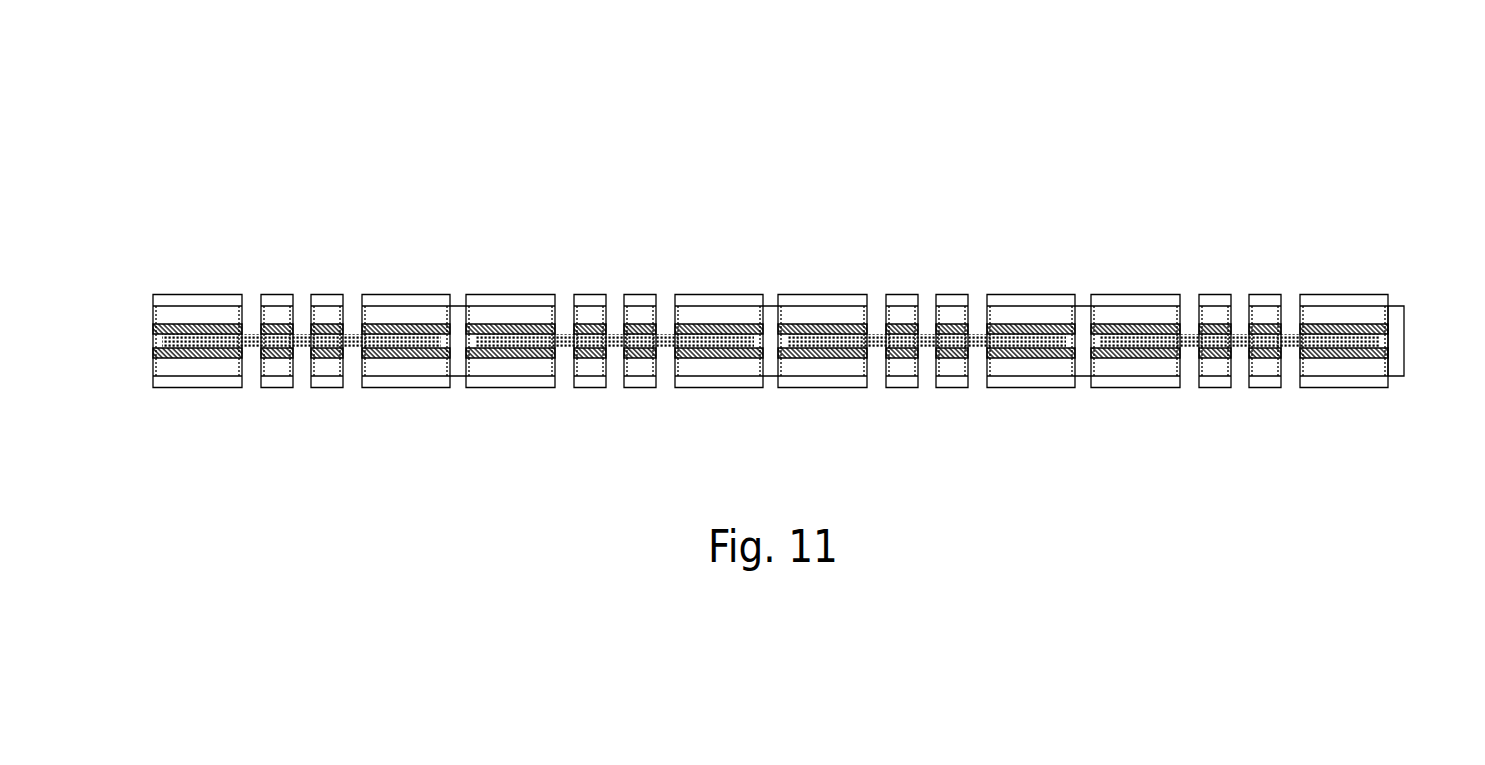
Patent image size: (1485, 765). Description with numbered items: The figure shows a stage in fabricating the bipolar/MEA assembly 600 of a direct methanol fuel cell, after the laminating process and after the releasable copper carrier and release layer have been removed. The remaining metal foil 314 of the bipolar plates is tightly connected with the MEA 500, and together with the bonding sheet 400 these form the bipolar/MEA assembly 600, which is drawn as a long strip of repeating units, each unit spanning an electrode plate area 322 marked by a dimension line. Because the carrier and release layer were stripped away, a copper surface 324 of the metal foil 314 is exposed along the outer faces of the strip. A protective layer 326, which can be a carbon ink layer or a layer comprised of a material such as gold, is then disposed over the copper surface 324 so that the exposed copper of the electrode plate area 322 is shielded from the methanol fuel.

The bipolar/MEA assembly 600 is at (1106, 124).
The electrode plate area 322 is at (1368, 245).
The protective layer 326 is at (1377, 295).
The copper surface 324 is at (1368, 308).
The metal foil 314 is at (1211, 368).
The bonding sheet 400 is at (1080, 340).
The MEA 500 is at (155, 338).